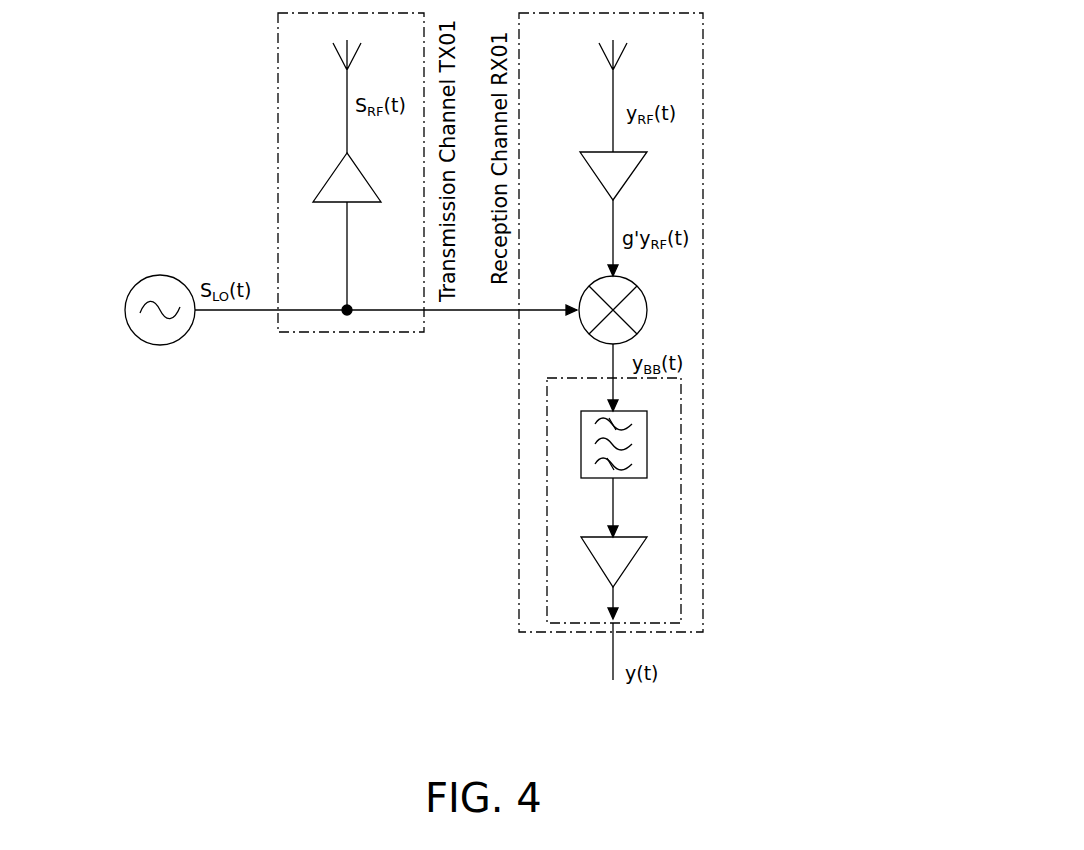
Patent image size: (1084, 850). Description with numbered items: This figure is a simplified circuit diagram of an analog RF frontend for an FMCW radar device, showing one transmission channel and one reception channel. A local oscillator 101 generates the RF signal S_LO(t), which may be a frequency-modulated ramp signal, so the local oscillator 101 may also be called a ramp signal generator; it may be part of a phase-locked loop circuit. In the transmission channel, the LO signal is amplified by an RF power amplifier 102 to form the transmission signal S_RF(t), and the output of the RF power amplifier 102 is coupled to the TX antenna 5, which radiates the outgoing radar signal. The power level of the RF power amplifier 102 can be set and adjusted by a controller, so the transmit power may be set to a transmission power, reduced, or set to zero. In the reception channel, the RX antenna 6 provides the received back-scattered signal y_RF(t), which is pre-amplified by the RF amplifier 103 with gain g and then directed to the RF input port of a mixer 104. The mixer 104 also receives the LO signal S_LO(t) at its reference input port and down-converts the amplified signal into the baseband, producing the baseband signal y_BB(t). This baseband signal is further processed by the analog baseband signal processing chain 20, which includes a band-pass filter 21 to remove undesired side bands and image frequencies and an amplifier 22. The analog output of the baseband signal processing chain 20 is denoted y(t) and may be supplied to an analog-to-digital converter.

The TX antenna 5 is at (343, 57).
The RX antenna 6 is at (625, 52).
The analog baseband signal processing chain 20 is at (642, 483).
The band-pass filter 21 is at (580, 440).
The amplifier 22 is at (581, 546).
The local oscillator 101 is at (160, 346).
The RF power amplifier 102 is at (331, 177).
The RF amplifier 103 is at (637, 165).
The mixer 104 is at (647, 306).